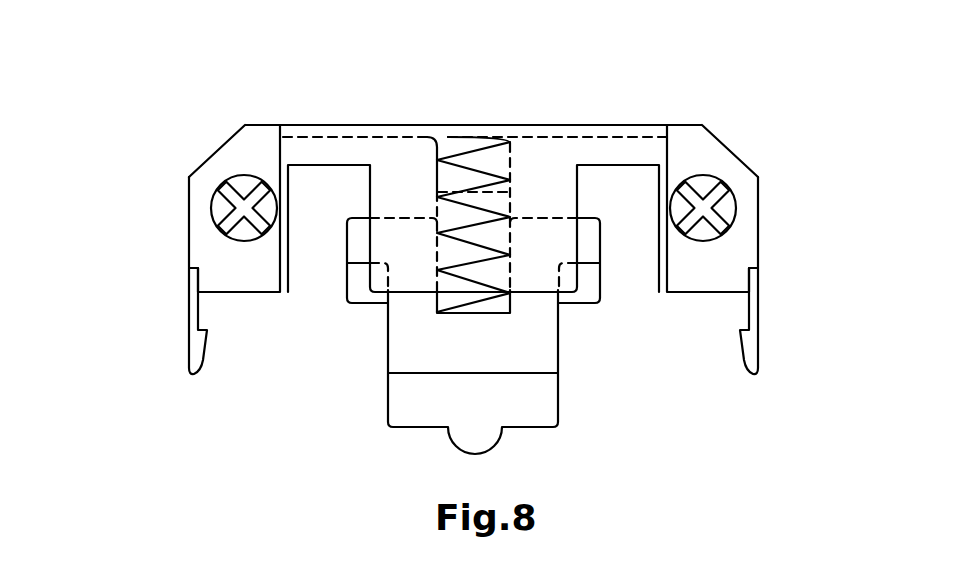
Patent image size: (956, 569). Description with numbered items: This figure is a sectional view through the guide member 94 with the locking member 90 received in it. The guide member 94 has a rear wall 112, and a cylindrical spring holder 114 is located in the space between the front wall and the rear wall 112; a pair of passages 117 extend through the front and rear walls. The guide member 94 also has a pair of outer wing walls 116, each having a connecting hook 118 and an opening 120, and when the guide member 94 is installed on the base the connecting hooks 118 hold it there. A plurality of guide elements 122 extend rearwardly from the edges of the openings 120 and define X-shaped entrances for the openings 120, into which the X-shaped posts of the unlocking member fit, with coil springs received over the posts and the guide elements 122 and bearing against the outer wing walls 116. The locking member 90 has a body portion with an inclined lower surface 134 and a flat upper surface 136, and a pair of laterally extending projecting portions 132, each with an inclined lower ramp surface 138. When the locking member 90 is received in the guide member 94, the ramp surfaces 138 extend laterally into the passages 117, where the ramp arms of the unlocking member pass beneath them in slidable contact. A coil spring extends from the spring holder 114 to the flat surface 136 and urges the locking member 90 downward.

The locking member 90 is at (383, 417).
The guide member 94 is at (558, 98).
The rear wall 112 is at (418, 284).
The cylindrical spring holder 114 is at (437, 172).
The outer wing walls 116 is at (237, 148).
The passages 117 is at (336, 188).
The connecting hook 118 is at (206, 372).
The opening 120 is at (216, 238).
The guide elements 122 is at (213, 207).
The projecting portions 132 is at (357, 238).
The inclined lower surface 134 is at (420, 410).
The flat upper surface 136 is at (508, 297).
The inclined lower ramp surface 138 is at (360, 292).